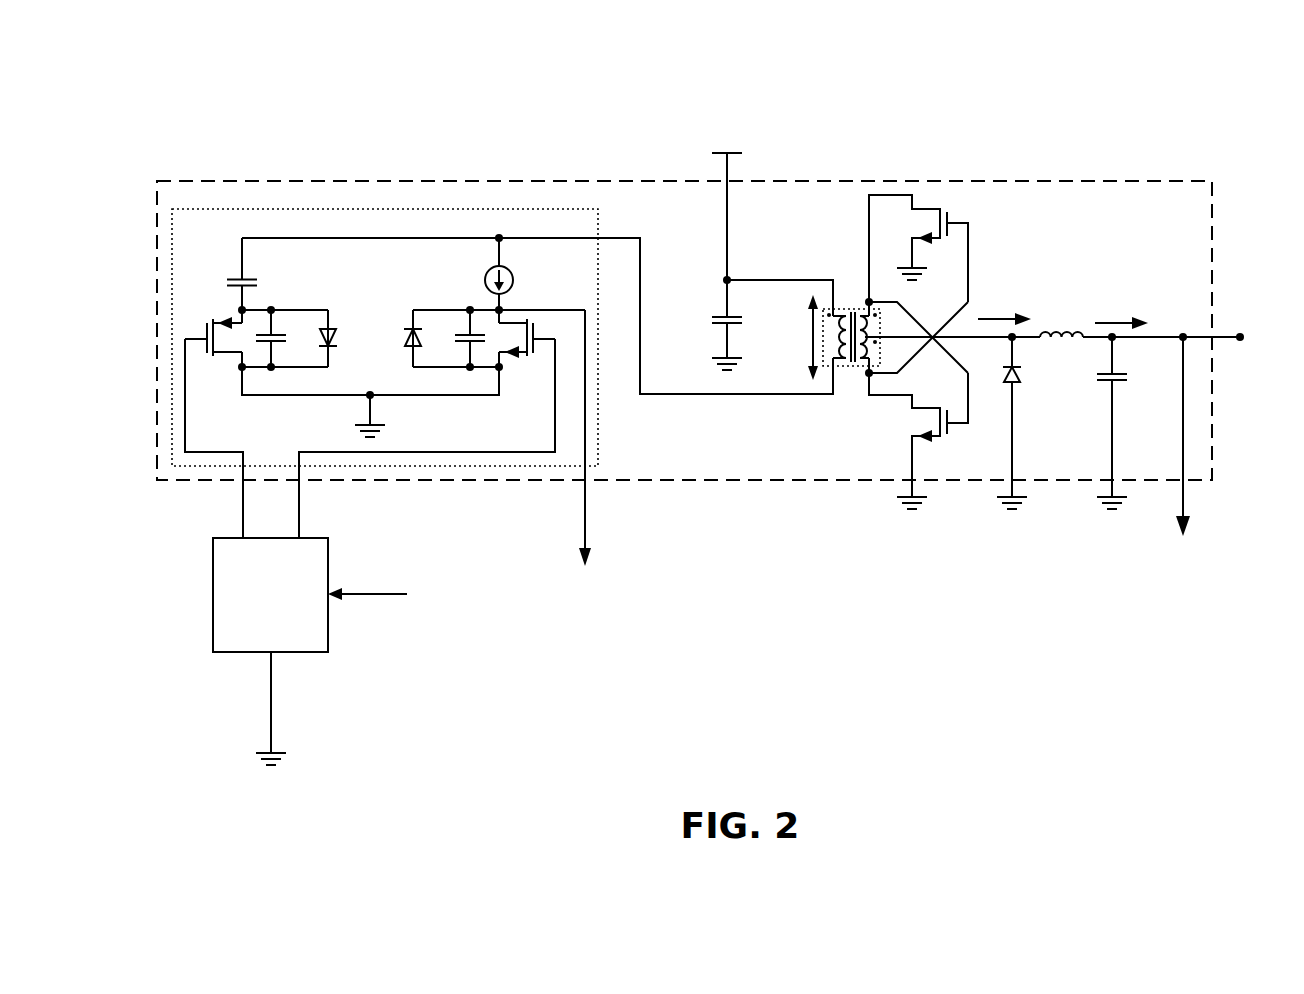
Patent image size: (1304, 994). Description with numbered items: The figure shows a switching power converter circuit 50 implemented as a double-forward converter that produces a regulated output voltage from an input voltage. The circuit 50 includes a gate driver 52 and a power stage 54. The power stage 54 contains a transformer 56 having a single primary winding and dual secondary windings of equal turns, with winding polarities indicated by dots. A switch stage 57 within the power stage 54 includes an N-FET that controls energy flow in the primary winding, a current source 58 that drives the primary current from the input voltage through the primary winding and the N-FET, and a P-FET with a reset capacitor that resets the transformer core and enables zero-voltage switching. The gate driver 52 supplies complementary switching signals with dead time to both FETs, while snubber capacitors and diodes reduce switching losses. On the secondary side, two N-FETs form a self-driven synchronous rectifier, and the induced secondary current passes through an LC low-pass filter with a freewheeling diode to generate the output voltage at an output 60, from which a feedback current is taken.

The switching power converter circuit 50 is at (266, 90).
The gate driver 52 is at (315, 538).
The power stage 54 is at (238, 181).
The transformer 56 is at (855, 366).
The switch stage 57 is at (525, 209).
The current source 58 is at (512, 270).
The output 60 is at (1183, 305).